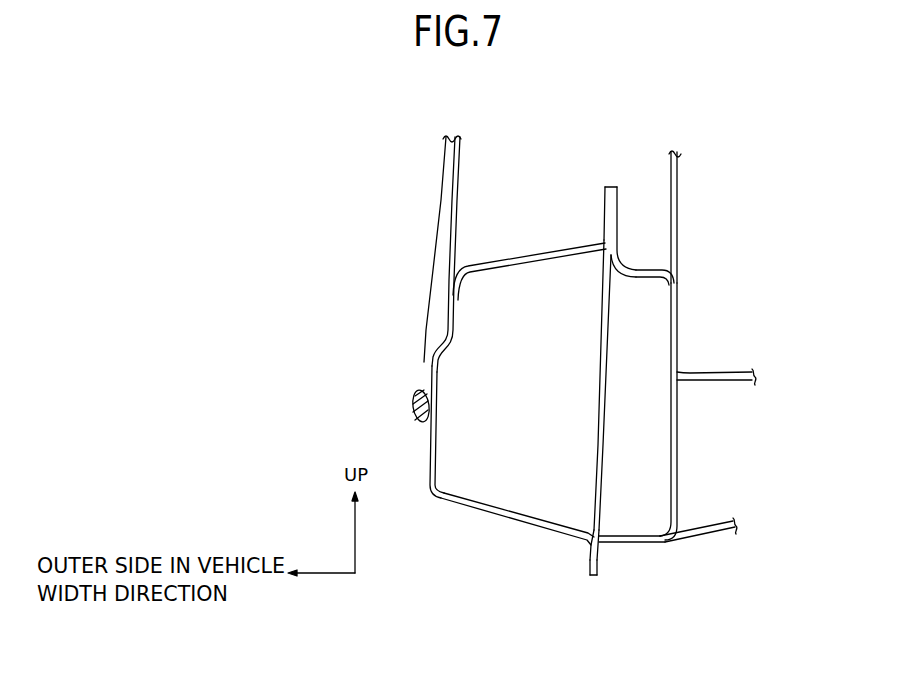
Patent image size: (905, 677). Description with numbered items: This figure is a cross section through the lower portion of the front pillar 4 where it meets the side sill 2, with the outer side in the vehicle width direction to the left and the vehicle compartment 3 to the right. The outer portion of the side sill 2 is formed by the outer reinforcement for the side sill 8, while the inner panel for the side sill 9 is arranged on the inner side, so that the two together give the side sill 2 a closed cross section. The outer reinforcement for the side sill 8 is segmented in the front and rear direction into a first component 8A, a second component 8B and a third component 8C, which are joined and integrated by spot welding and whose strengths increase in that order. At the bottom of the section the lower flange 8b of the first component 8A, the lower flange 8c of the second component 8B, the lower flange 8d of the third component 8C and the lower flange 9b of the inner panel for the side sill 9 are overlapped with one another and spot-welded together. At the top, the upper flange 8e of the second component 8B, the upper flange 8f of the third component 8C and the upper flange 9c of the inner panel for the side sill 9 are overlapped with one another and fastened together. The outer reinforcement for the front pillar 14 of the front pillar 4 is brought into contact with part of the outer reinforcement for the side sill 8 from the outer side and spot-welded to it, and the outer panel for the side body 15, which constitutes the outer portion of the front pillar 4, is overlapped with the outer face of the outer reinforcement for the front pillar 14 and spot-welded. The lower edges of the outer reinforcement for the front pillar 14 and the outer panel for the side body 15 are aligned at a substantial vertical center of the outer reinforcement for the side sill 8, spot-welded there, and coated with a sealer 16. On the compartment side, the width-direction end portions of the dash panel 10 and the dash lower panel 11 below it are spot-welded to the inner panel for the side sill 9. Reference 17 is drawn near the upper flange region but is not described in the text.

The side sill 2 is at (446, 511).
The vehicle compartment 3 is at (729, 261).
The front pillar 4 is at (678, 183).
The outer reinforcement for the side sill 8 is at (488, 261).
The first component 8A is at (534, 256).
The second component 8B is at (532, 269).
The third component 8C is at (599, 445).
The lower flange of the first component 8b is at (589, 559).
The lower flange of the second component 8c is at (588, 572).
The lower flange of the third component 8d is at (593, 577).
The upper flange of the second component 8e is at (605, 206).
The upper flange of the third component 8f is at (615, 189).
The inner panel for the side sill 9 is at (678, 461).
The lower flange of the inner panel for the side sill 9b is at (600, 568).
The upper flange of the inner panel for the side sill 9c is at (616, 215).
The dash panel 10 is at (716, 376).
The dash lower panel 11 is at (714, 532).
The outer reinforcement for the front pillar 14 is at (455, 197).
The outer panel for the side body 15 is at (427, 240).
The sealer 16 is at (414, 418).
The upper flange 17 is at (677, 239).